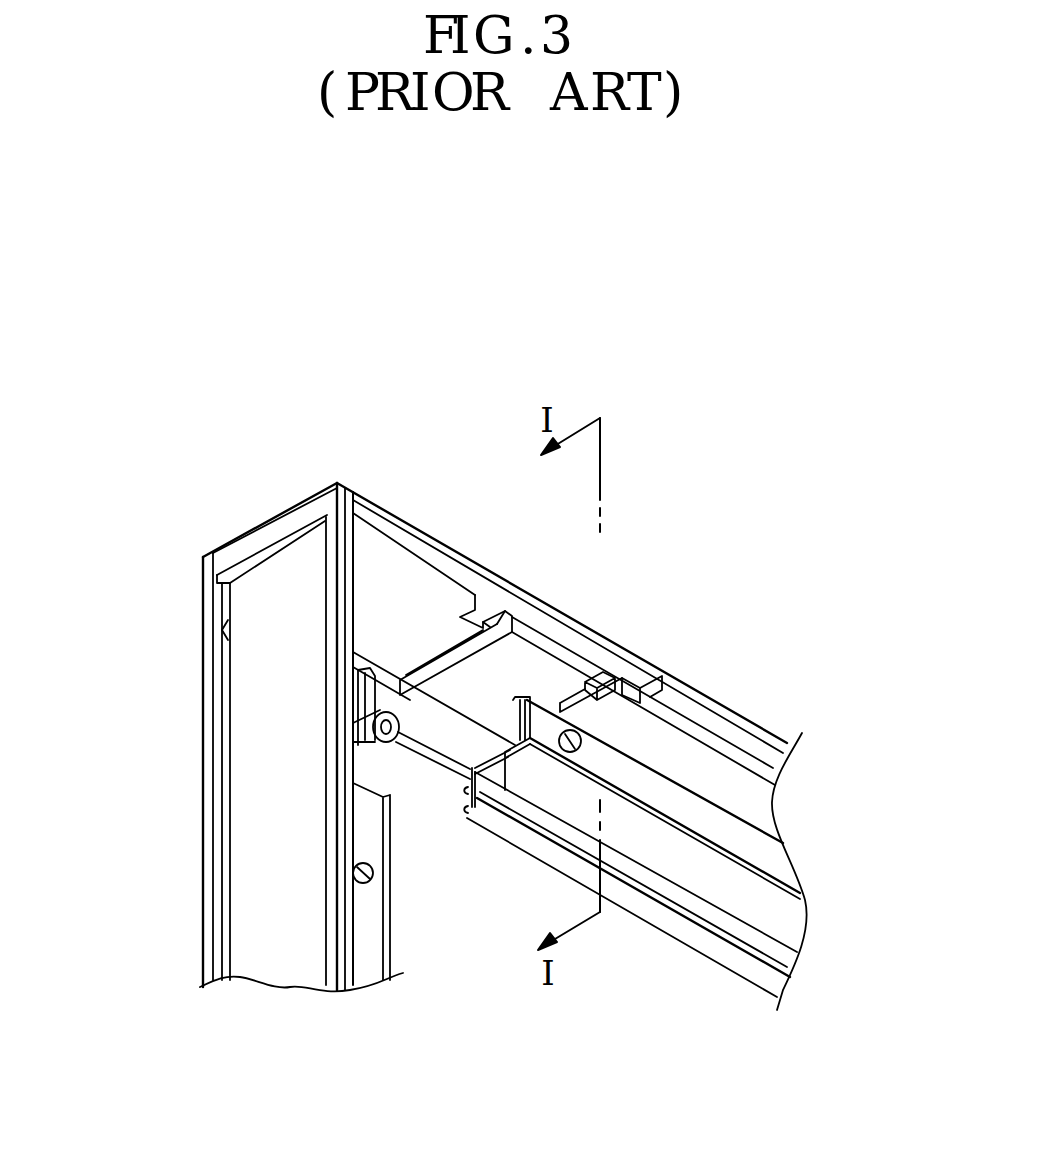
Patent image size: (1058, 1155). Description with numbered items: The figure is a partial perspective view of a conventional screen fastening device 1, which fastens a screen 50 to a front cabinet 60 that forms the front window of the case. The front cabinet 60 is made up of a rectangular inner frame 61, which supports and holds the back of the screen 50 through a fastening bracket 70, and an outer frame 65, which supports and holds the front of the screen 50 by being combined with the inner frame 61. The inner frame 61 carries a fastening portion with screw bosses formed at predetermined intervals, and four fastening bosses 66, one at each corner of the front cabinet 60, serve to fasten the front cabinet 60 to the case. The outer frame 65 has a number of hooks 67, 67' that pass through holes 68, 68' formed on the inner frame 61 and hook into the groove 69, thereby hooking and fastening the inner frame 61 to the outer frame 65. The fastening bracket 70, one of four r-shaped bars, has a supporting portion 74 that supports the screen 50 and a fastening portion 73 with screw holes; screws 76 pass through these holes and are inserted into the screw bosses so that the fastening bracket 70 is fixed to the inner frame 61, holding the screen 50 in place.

The screen fastening device 1 is at (120, 202).
The screen 50 is at (532, 933).
The front cabinet 60 is at (209, 496).
The inner frame 61 is at (388, 545).
The outer frame 65 is at (383, 681).
The fastening boss 66 is at (363, 737).
The hook 67 is at (462, 616).
The hole 68 is at (401, 778).
The groove 69 is at (550, 660).
The fastening portion 73 is at (547, 718).
The hook 67' is at (660, 650).
The screw 76 is at (603, 740).
The hole 68' is at (531, 826).
The supporting portion 74 is at (472, 800).
The fastening bracket 70 is at (720, 883).